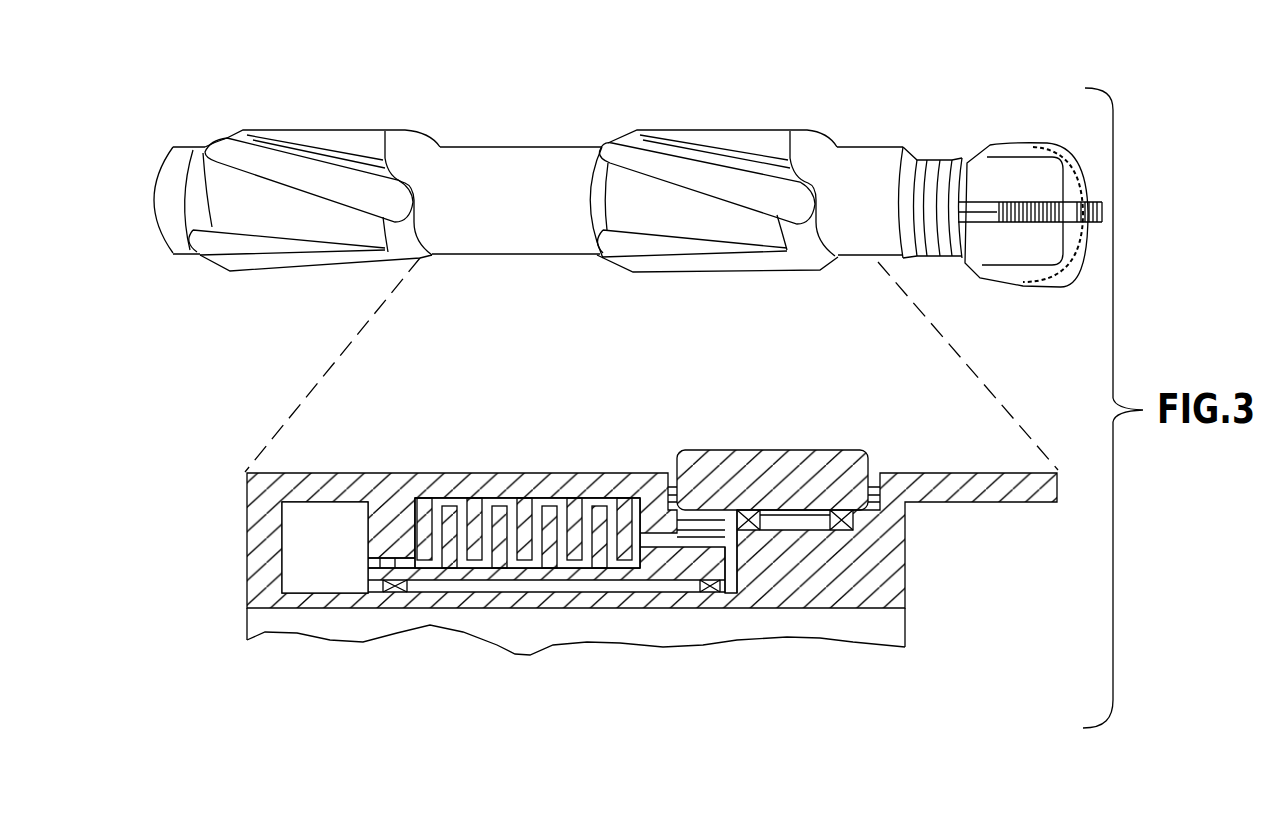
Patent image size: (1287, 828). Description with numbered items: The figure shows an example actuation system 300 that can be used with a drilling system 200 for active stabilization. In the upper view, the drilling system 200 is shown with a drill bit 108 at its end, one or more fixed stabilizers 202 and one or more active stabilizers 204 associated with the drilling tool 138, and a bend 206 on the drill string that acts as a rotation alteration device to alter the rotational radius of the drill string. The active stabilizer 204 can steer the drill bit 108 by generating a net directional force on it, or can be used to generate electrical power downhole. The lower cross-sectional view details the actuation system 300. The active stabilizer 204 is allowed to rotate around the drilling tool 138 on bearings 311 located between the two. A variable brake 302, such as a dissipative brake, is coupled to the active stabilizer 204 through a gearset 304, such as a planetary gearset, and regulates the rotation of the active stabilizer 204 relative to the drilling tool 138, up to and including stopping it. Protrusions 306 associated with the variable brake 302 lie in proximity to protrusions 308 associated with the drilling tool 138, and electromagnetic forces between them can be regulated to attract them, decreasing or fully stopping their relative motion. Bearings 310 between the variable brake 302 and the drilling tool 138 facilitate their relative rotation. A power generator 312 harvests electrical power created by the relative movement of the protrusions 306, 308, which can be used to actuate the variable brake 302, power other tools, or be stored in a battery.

The drilling system 200 is at (937, 57).
The fixed stabilizer 202 is at (296, 130).
The drilling tool 138 is at (537, 146).
The active stabilizer 204 is at (722, 130).
The bend 206 is at (895, 150).
The drill bit 108 is at (1020, 142).
The actuation system 300 is at (226, 629).
The variable brake 302 is at (670, 598).
The gearset 304 is at (717, 510).
The protrusions 306 is at (560, 505).
The protrusions 308 is at (460, 562).
The bearings 310 is at (392, 596).
The bearings 311 is at (852, 522).
The power generator 312 is at (323, 575).